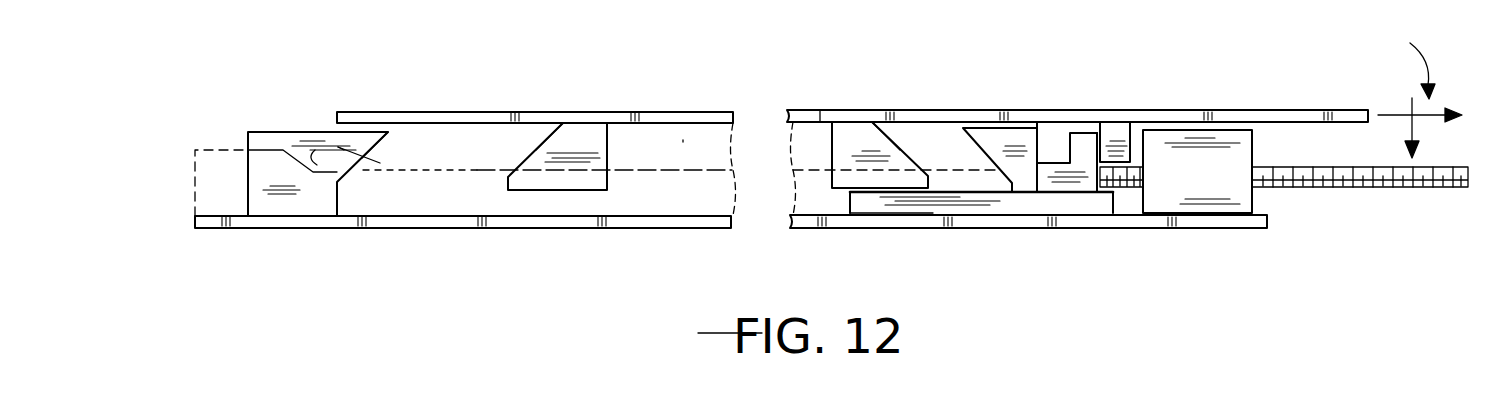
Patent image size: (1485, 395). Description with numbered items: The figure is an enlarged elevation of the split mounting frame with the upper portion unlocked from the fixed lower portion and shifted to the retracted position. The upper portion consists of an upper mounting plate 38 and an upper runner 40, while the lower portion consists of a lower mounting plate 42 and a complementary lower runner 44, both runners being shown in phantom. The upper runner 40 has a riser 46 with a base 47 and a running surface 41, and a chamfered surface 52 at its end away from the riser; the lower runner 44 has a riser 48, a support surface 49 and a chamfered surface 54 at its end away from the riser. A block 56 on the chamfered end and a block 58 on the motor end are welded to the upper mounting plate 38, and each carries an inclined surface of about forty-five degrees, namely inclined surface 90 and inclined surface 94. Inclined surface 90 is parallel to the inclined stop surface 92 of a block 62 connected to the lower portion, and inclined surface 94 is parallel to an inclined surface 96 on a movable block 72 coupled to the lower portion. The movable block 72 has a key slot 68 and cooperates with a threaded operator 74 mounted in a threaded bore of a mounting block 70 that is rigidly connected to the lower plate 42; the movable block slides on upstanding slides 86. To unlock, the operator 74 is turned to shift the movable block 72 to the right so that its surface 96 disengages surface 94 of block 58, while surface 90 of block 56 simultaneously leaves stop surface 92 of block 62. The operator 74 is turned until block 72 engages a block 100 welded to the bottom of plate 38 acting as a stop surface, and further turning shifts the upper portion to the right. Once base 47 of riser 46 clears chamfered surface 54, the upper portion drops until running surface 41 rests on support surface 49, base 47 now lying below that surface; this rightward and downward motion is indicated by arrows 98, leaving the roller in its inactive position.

The upper mounting plate 38 is at (1353, 110).
The upper runner 40 is at (733, 140).
The running surface 41 is at (448, 167).
The lower mounting plate 42 is at (1257, 228).
The lower runner 44 is at (208, 147).
The riser 46 is at (338, 147).
The base 47 is at (1003, 187).
The riser 48 is at (317, 165).
The support surface 49 is at (365, 172).
The chamfered surface 52 is at (380, 163).
The chamfered surface 54 is at (862, 207).
The block 56 is at (582, 150).
The block 58 is at (847, 140).
The block 62 is at (273, 131).
The key slot 68 is at (1063, 143).
The mounting block 70 is at (1213, 183).
The movable block 72 is at (1067, 183).
The threaded operator 74 is at (1433, 187).
The upstanding slides 86 is at (847, 228).
The inclined surface 90 is at (540, 147).
The inclined stop surface 92 is at (383, 137).
The inclined surface 94 is at (897, 146).
The inclined surface 96 is at (967, 145).
The arrows 98 is at (1420, 81).
The block 100 is at (1112, 133).